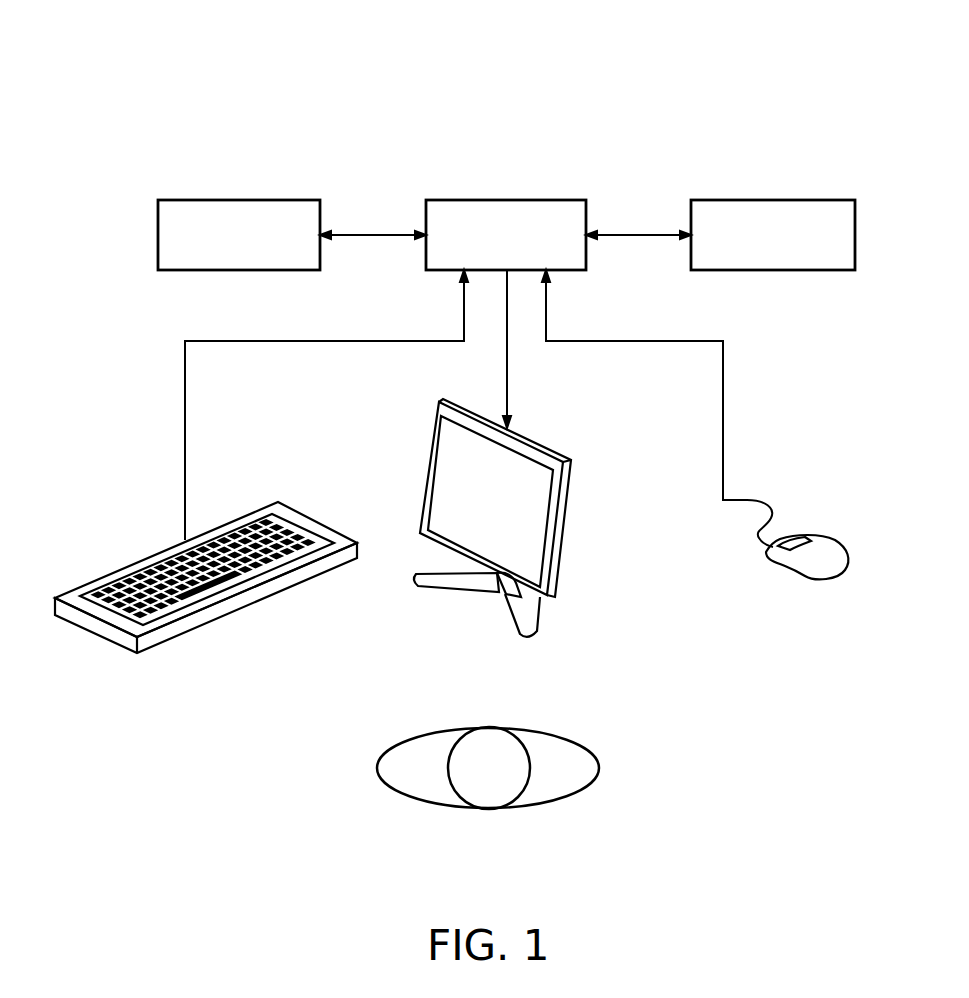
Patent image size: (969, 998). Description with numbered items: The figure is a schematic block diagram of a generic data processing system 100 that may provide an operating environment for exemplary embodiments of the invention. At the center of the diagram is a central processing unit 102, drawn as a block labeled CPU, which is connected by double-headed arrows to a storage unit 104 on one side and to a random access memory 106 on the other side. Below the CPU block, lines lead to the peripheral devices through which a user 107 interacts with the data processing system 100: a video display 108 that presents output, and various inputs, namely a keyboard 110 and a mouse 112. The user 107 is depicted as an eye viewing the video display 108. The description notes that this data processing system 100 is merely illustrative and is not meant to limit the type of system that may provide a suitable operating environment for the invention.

The data processing system 100 is at (722, 58).
The central processing unit 102 is at (526, 199).
The storage unit 104 is at (262, 199).
The random access memory 106 is at (797, 199).
The user 107 is at (540, 730).
The video display 108 is at (553, 452).
The keyboard 110 is at (138, 560).
The mouse 112 is at (828, 540).